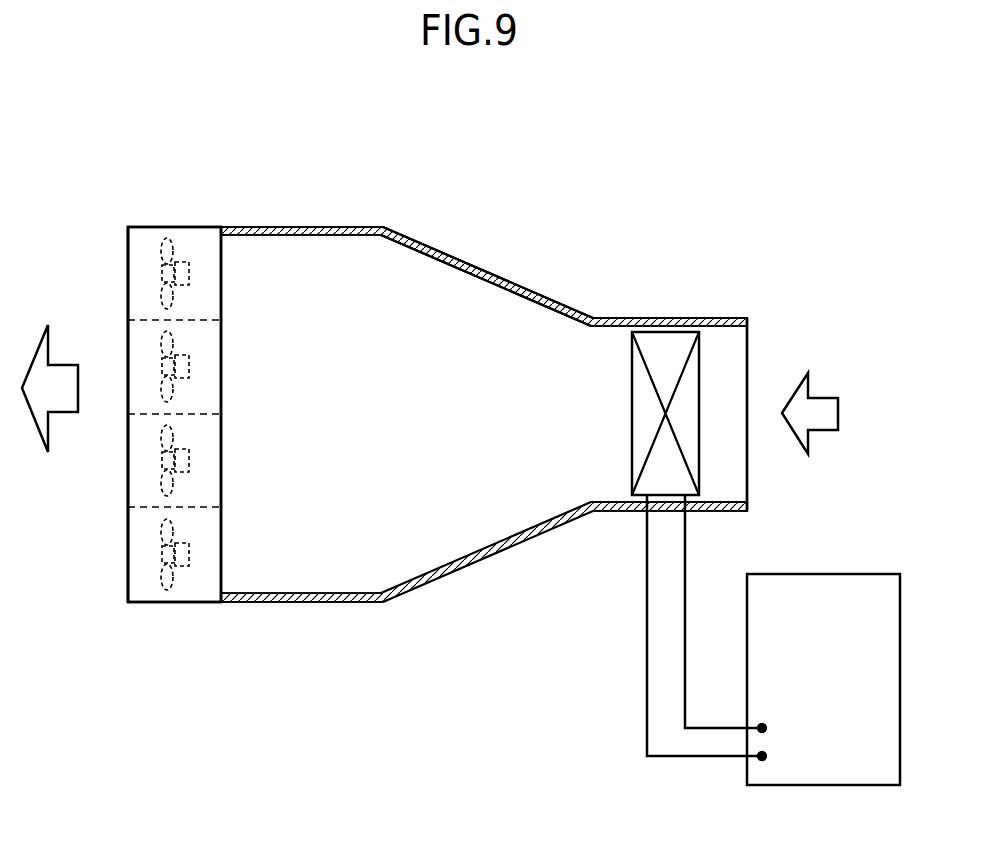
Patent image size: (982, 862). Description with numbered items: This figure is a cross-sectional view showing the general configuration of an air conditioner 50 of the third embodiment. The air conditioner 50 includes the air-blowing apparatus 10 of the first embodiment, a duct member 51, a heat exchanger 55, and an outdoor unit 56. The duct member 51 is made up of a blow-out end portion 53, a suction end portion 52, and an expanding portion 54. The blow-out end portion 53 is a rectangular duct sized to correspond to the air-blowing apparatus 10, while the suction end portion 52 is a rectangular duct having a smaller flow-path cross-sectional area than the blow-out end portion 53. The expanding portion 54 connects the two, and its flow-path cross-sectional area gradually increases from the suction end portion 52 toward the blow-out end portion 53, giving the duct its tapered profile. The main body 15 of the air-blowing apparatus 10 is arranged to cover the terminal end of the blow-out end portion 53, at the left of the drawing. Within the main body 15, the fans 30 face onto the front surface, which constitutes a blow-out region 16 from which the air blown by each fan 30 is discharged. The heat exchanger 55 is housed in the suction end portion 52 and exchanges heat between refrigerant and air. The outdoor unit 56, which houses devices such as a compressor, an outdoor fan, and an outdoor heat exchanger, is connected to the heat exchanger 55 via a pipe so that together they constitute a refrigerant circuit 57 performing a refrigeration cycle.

The air-blowing apparatus 10 is at (155, 226).
The main body 15 is at (184, 226).
The blow-out region 16 is at (126, 267).
The fan 30 is at (198, 274).
The air conditioner 50 is at (541, 143).
The duct member 51 is at (263, 226).
The suction end portion 52 is at (716, 317).
The blow-out end portion 53 is at (320, 226).
The expanding portion 54 is at (492, 273).
The heat exchanger 55 is at (630, 400).
The outdoor unit 56 is at (870, 573).
The refrigerant circuit 57 is at (644, 635).